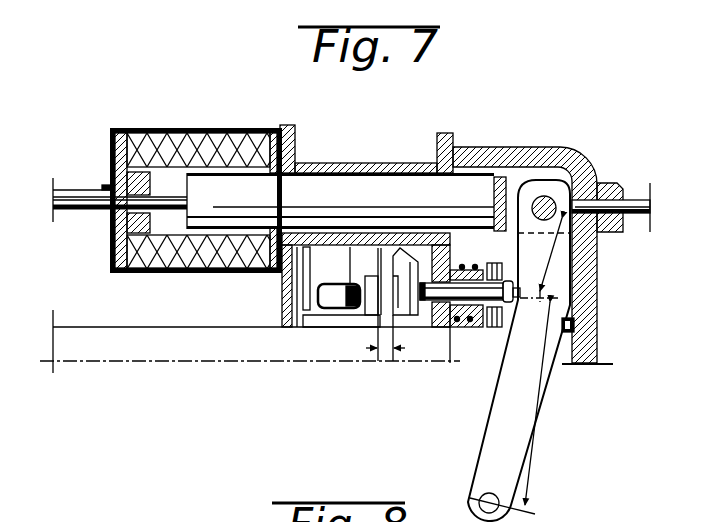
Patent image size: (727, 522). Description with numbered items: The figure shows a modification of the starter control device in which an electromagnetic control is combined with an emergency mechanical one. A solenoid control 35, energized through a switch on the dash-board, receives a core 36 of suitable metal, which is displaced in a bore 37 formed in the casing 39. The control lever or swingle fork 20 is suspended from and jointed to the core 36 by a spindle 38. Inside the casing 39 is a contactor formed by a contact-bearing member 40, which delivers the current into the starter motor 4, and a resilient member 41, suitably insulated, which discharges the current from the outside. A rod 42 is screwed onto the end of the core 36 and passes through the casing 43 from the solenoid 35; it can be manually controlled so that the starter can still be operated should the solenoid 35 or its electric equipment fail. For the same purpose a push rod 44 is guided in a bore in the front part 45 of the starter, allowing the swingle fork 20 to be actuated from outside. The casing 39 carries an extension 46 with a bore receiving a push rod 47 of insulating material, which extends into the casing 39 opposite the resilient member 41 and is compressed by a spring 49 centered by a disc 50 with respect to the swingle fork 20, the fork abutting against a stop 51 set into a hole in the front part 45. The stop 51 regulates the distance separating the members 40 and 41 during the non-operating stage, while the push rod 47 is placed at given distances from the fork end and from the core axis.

The starter motor 4 is at (140, 347).
The swingle fork 20 is at (500, 430).
The solenoid control 35 is at (162, 148).
The core 36 is at (232, 195).
The bore 37 is at (387, 164).
The spindle 38 is at (548, 197).
The casing 39 is at (320, 160).
The contact-bearing member 40 is at (328, 316).
The resilient member 41 is at (383, 277).
The rod 42 is at (72, 200).
The casing 43 is at (112, 243).
The push rod 44 is at (632, 208).
The front part 45 is at (502, 148).
The extension 46 is at (472, 272).
The push rod 47 is at (432, 312).
The spring 49 is at (467, 326).
The disc 50 is at (498, 267).
The stop 51 is at (578, 325).